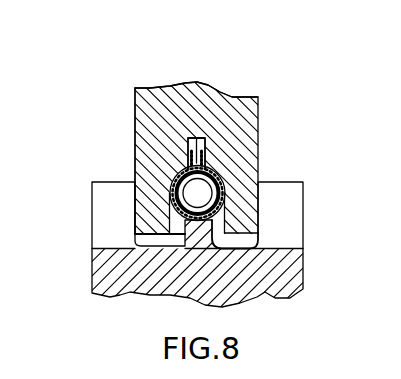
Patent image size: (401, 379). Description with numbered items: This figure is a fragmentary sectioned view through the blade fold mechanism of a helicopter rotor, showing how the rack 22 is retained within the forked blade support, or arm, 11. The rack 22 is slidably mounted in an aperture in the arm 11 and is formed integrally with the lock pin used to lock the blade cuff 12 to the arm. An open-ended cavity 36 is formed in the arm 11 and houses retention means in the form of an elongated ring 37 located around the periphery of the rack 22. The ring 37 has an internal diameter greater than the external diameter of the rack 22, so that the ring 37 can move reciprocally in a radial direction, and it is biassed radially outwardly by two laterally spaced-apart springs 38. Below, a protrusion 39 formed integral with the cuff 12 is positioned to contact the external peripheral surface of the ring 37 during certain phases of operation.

The blade support 11 is at (257, 96).
The blade cuff 12 is at (293, 290).
The rack 22 is at (198, 192).
The open-ended cavity 36 is at (222, 200).
The elongated ring 37 is at (135, 163).
The springs 38 is at (136, 88).
The protrusion 39 is at (150, 234).